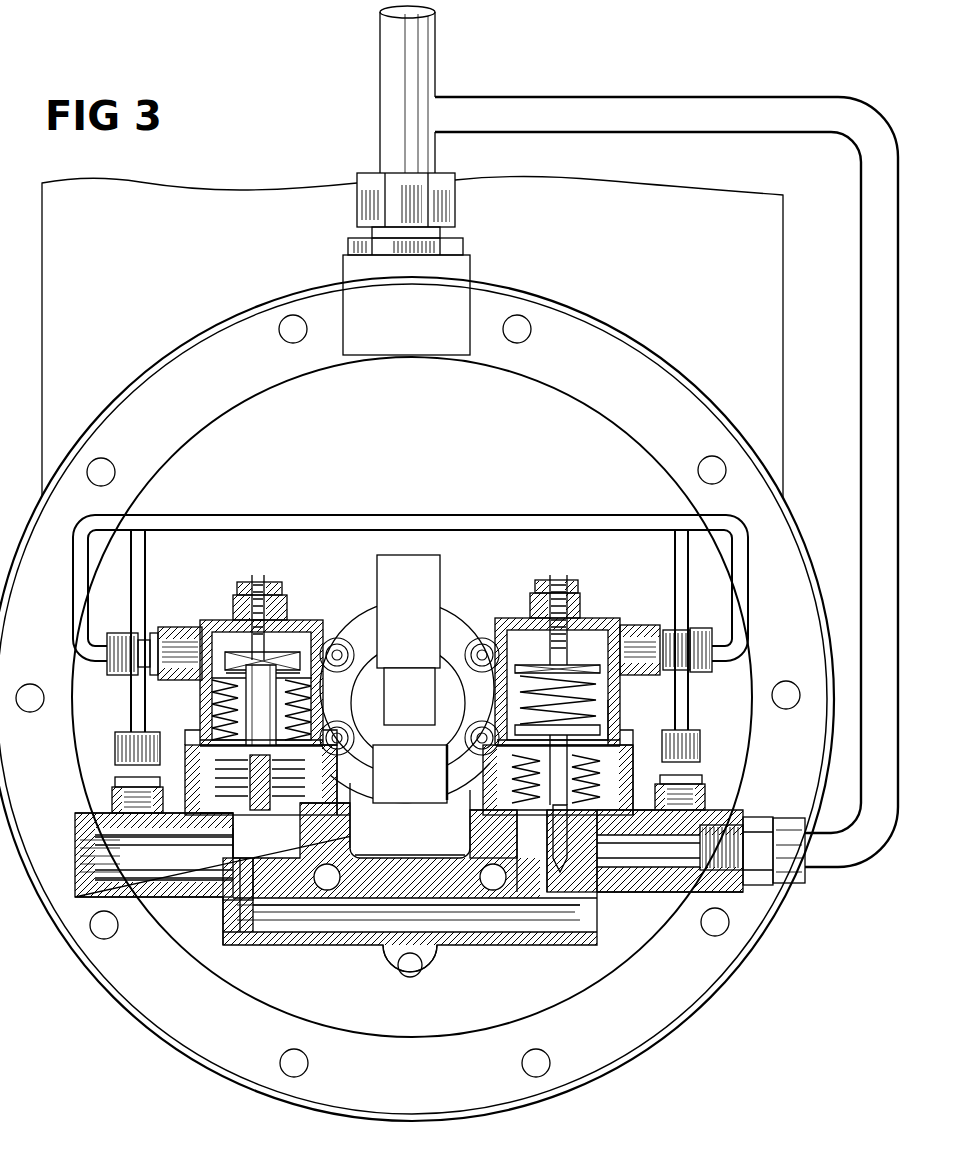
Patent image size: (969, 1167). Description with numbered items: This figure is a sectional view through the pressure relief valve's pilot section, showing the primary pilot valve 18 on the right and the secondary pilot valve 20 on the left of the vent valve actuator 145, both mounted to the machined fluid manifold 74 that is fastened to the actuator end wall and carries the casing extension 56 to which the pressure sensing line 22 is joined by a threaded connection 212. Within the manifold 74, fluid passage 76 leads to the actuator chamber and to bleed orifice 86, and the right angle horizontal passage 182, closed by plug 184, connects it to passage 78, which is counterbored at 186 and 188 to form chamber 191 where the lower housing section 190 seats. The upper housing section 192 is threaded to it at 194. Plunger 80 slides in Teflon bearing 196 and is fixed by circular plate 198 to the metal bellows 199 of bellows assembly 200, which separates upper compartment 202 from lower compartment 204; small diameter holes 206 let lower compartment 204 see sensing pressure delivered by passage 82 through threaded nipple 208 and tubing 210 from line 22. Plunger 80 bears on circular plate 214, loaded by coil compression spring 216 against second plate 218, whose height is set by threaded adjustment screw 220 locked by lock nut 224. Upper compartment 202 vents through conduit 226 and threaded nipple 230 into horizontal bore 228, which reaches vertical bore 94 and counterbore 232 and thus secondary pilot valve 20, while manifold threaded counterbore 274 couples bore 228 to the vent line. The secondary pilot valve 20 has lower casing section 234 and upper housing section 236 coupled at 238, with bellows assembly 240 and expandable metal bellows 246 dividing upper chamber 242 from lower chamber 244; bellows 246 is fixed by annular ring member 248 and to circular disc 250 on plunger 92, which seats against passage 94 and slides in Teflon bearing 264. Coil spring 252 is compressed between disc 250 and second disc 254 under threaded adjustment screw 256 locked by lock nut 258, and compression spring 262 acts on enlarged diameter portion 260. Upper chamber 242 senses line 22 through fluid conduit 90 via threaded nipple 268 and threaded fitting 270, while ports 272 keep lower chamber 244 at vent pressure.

The primary pilot valve 18 is at (598, 596).
The secondary pilot valve 20 is at (298, 596).
The pressure sensing line 22 is at (424, 62).
The poppet actuator cylinder casing extension 56 is at (557, 398).
The fluid manifold 74 is at (292, 946).
The fluid passage 76 is at (382, 947).
The passage 78 is at (561, 905).
The valve plunger 80 is at (562, 864).
The fluid passage 82 is at (636, 883).
The bleed orifice 86 is at (292, 897).
The fluid conduit 90 is at (200, 515).
The secondary pilot valve plunger 92 is at (232, 832).
The vertical bore 94 is at (268, 882).
The vent valve actuator 145 is at (450, 595).
The right angle horizontal passage 182 is at (463, 923).
The plug 184 is at (224, 924).
The counterbore 186 is at (506, 872).
The counterbore 188 is at (481, 822).
The lower housing section 190 is at (700, 795).
The chamber 191 is at (612, 826).
The upper primary pilot valve housing section 192 is at (614, 720).
The threaded connection 194 is at (497, 770).
The Teflon bearing 196 is at (602, 892).
The circular plate 198 is at (690, 850).
The metal bellows 199 is at (614, 745).
The bellows assembly 200 is at (470, 790).
The upper compartment 202 is at (596, 632).
The lower compartment 204 is at (620, 766).
The small diameter holes 206 is at (522, 838).
The threaded nipple 208 is at (794, 886).
The tubing 210 is at (860, 423).
The threaded connection 212 is at (455, 207).
The circular plate 214 is at (522, 698).
The coil compression spring 216 is at (495, 700).
The second plate 218 is at (538, 666).
The threaded adjustment screw 220 is at (548, 614).
The lock nut 224 is at (565, 580).
The conduit 226 is at (748, 592).
The horizontal bore 228 is at (158, 860).
The threaded nipple 230 is at (115, 772).
The counterbore 232 is at (341, 799).
The lower casing section 234 is at (340, 800).
The upper housing section 236 is at (312, 682).
The threaded coupling 238 is at (326, 770).
The bellows assembly 240 is at (213, 704).
The upper chamber 242 is at (293, 634).
The lower chamber 244 is at (357, 752).
The expandable metal bellows 246 is at (215, 725).
The annular ring member 248 is at (325, 720).
The circular disc 250 is at (240, 680).
The coil spring 252 is at (286, 680).
The second disc 254 is at (232, 632).
The threaded adjustment screw 256 is at (252, 582).
The lock nut 258 is at (278, 582).
The enlarged diameter portion 260 is at (213, 858).
The compression spring 262 is at (200, 814).
The Teflon bearing 264 is at (356, 849).
The threaded nipple 268 is at (697, 748).
The threaded fitting 270 is at (120, 633).
The ports 272 is at (355, 828).
The manifold threaded counterbore 274 is at (80, 862).